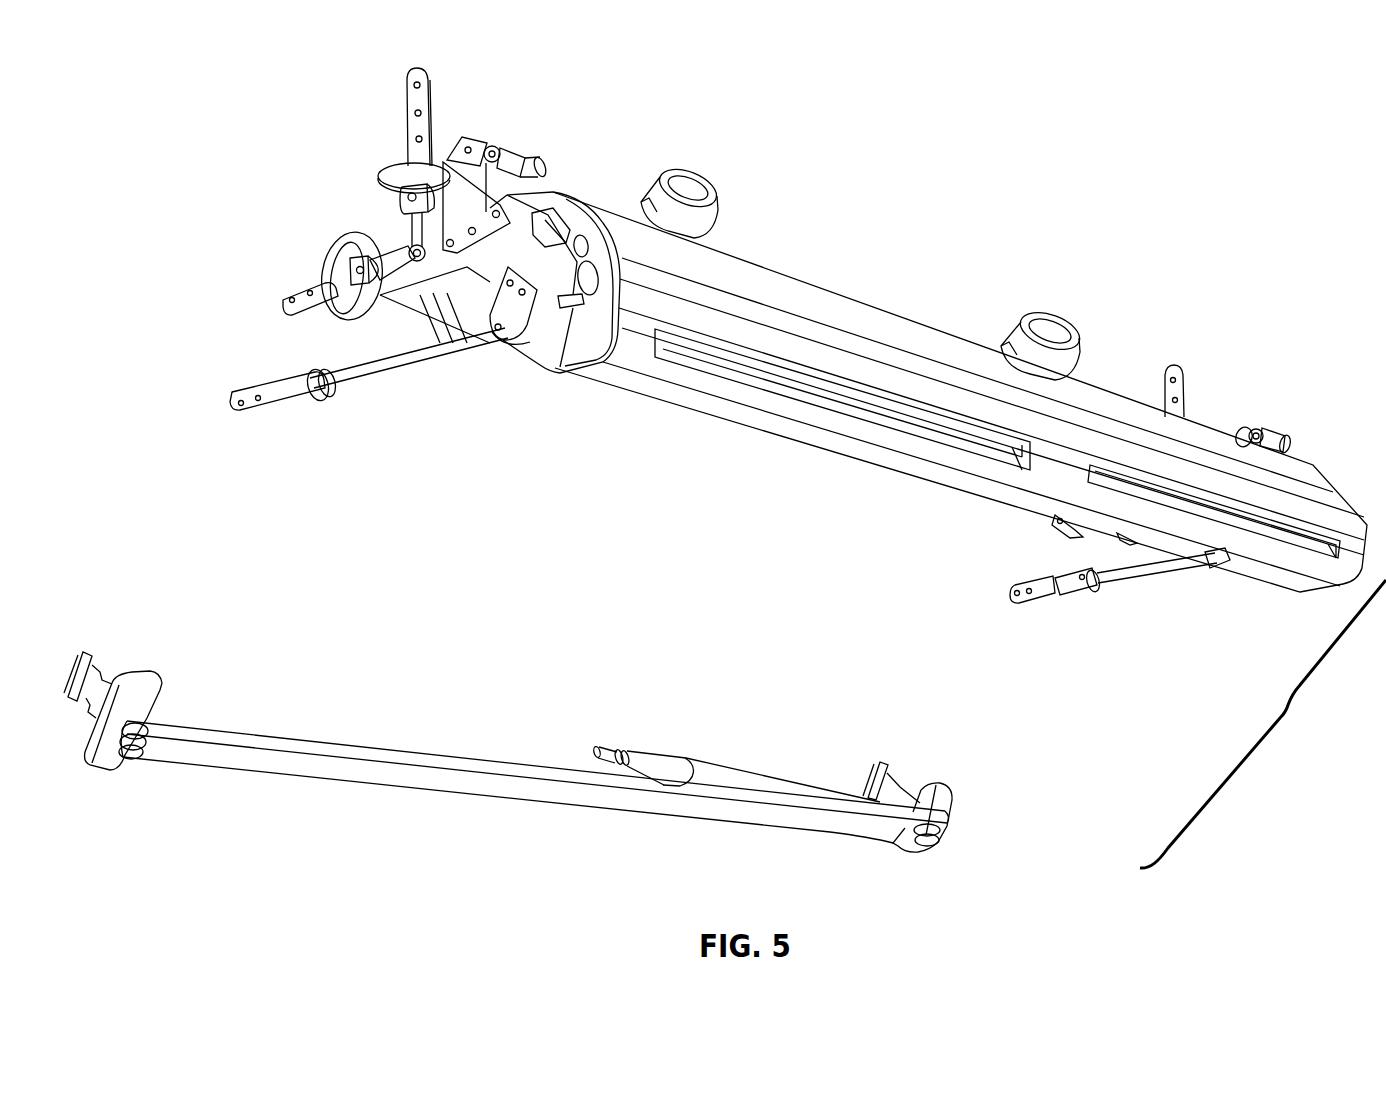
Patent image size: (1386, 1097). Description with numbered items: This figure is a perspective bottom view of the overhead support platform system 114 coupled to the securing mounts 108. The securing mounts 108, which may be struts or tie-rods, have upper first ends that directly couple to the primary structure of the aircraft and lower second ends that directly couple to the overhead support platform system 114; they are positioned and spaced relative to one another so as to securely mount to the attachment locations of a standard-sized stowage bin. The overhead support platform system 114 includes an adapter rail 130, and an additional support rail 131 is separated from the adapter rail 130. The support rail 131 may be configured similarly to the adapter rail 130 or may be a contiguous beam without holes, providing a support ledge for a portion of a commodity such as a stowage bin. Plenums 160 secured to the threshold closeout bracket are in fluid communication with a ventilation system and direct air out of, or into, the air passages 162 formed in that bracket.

The securing mounts 108 is at (428, 100).
The overhead support platform system 114 is at (1288, 708).
The adapter rail 130 is at (408, 305).
The support rail 131 is at (460, 758).
The plenums 160 is at (693, 173).
The air passages 162 is at (717, 357).